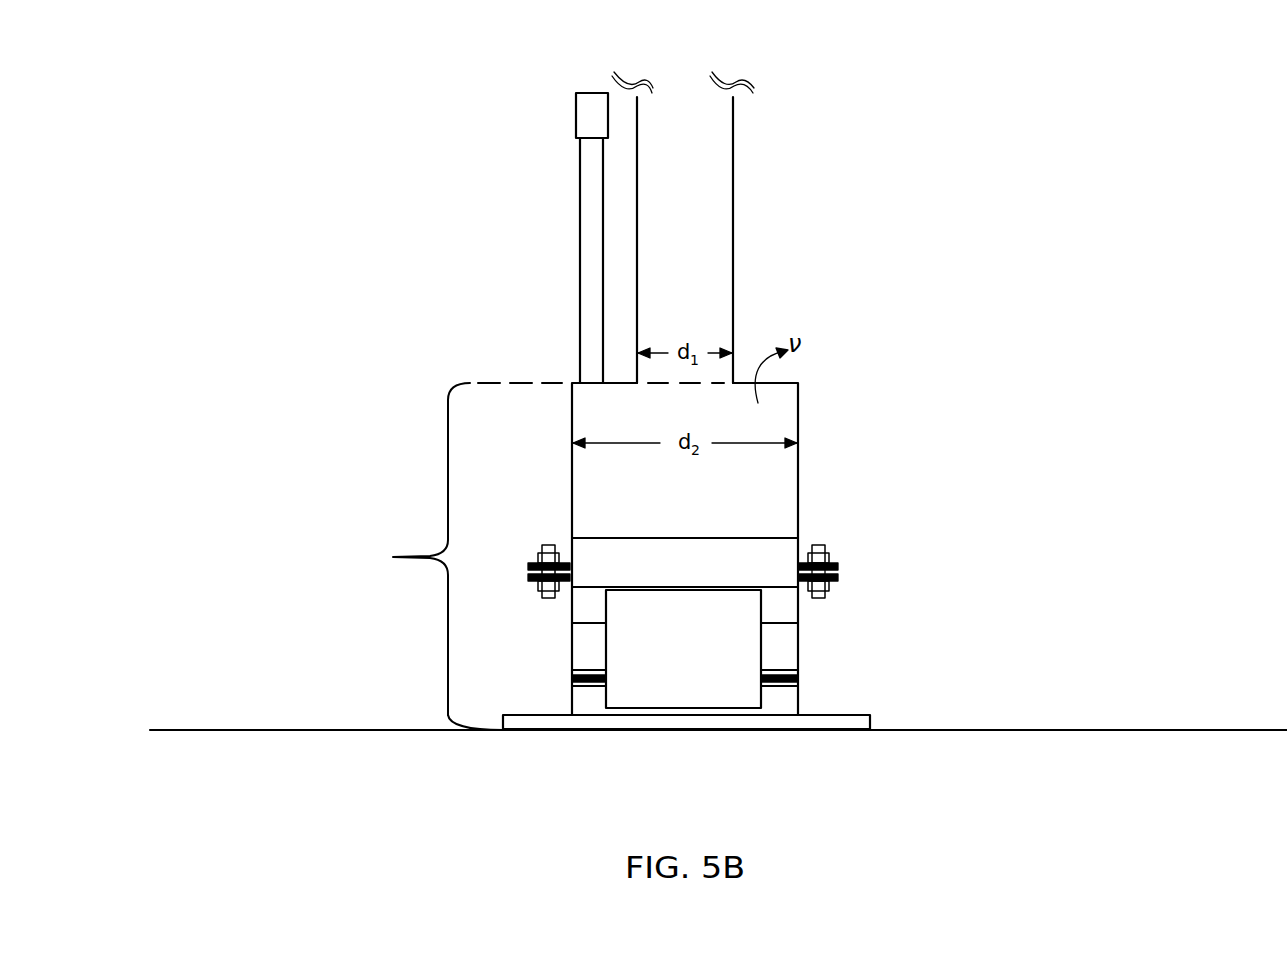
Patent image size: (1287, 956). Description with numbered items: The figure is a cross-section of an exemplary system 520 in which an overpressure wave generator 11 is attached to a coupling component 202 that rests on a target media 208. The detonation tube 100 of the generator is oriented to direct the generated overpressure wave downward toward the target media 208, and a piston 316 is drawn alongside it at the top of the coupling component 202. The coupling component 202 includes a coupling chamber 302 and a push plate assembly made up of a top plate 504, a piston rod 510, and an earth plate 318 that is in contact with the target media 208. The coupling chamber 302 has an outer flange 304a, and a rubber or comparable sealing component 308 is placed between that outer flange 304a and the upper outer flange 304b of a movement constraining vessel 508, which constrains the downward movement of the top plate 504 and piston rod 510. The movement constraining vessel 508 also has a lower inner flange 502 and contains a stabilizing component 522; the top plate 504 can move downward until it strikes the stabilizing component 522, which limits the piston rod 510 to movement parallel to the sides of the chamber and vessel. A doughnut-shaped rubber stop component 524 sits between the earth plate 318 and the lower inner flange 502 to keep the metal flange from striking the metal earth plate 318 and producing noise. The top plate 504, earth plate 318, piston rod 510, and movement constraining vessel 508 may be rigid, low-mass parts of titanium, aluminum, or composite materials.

The system 520 is at (700, 26).
The overpressure wave generator 11 is at (736, 66).
The piston 316 is at (578, 183).
The detonation tube 100 is at (736, 318).
The coupling chamber 302 is at (800, 418).
The coupling component 202 is at (455, 556).
The top plate 504 is at (634, 553).
The outer flange 304a is at (836, 565).
The sealing component 308 is at (840, 572).
The upper outer flange 304b is at (840, 580).
The piston rod 510 is at (608, 615).
The stabilizing component 522 is at (580, 641).
The stop component 524 is at (588, 700).
The movement constraining vessel 508 is at (802, 613).
The lower inner flange 502 is at (802, 675).
The earth plate 318 is at (740, 720).
The target media 208 is at (252, 746).